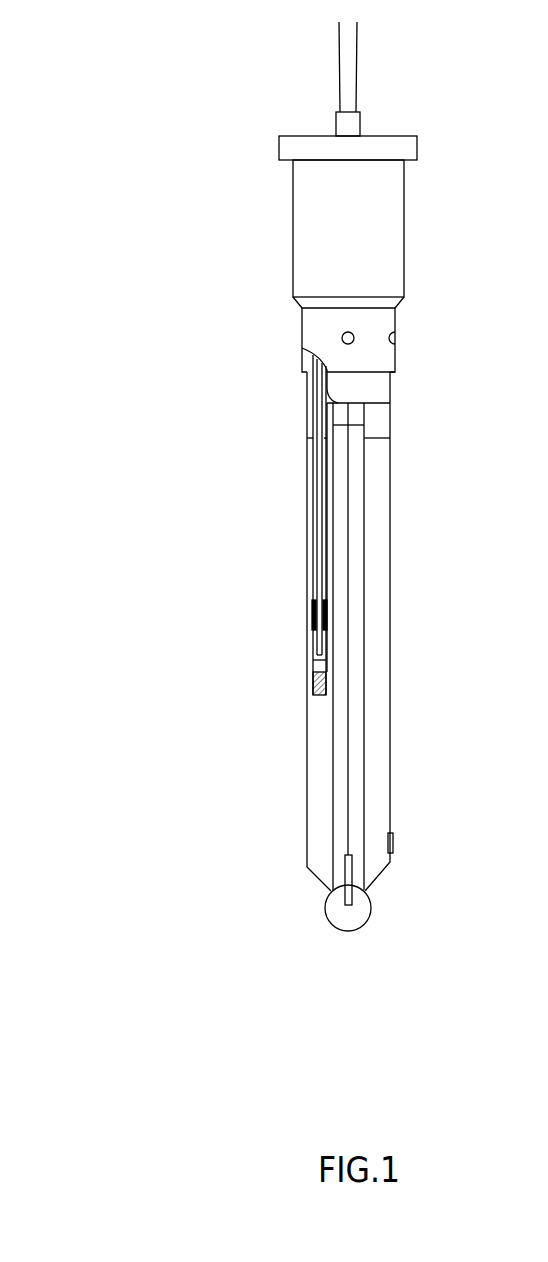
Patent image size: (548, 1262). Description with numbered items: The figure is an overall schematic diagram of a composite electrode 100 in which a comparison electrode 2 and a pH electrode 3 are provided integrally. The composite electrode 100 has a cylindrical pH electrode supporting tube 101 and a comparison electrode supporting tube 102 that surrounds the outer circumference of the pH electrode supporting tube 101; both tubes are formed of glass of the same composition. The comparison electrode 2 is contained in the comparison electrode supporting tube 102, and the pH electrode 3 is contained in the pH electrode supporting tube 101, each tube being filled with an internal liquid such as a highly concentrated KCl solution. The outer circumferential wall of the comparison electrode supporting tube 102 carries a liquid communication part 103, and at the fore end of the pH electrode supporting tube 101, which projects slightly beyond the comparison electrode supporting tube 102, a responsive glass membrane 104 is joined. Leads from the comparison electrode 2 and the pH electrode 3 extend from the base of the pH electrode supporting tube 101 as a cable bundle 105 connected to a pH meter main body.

The composite electrode 100 is at (200, 192).
The cable bundle 105 is at (358, 77).
The comparison electrode supporting tube 102 is at (305, 712).
The pH electrode supporting tube 101 is at (365, 740).
The liquid communication part 103 is at (395, 843).
The comparison electrode 2 is at (312, 652).
The pH electrode 3 is at (336, 895).
The responsive glass membrane 104 is at (367, 927).